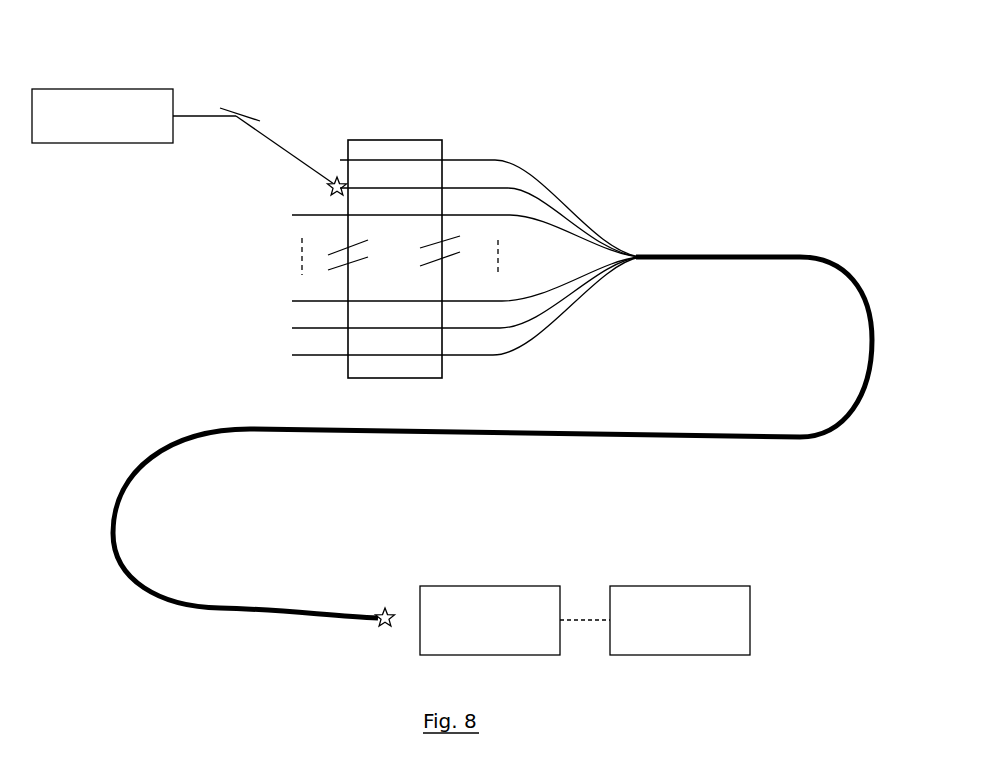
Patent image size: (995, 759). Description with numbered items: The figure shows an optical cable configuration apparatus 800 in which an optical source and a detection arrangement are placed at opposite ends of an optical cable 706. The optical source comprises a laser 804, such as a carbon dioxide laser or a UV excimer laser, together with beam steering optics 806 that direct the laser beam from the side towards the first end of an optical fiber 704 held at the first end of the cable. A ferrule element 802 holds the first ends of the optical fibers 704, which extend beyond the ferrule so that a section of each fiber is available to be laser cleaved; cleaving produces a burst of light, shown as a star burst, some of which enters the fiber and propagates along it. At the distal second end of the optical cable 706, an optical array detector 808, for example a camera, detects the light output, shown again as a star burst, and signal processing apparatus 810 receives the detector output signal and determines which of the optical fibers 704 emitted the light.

The optical cable configuration apparatus 800 is at (596, 59).
The ferrule element 802 is at (379, 149).
The laser 804 is at (132, 109).
The beam steering optics 806 is at (250, 117).
The optical fibers 704 is at (477, 160).
The optical cable 706 is at (758, 253).
The optical array detector 808 is at (498, 597).
The signal processing apparatus 810 is at (688, 597).